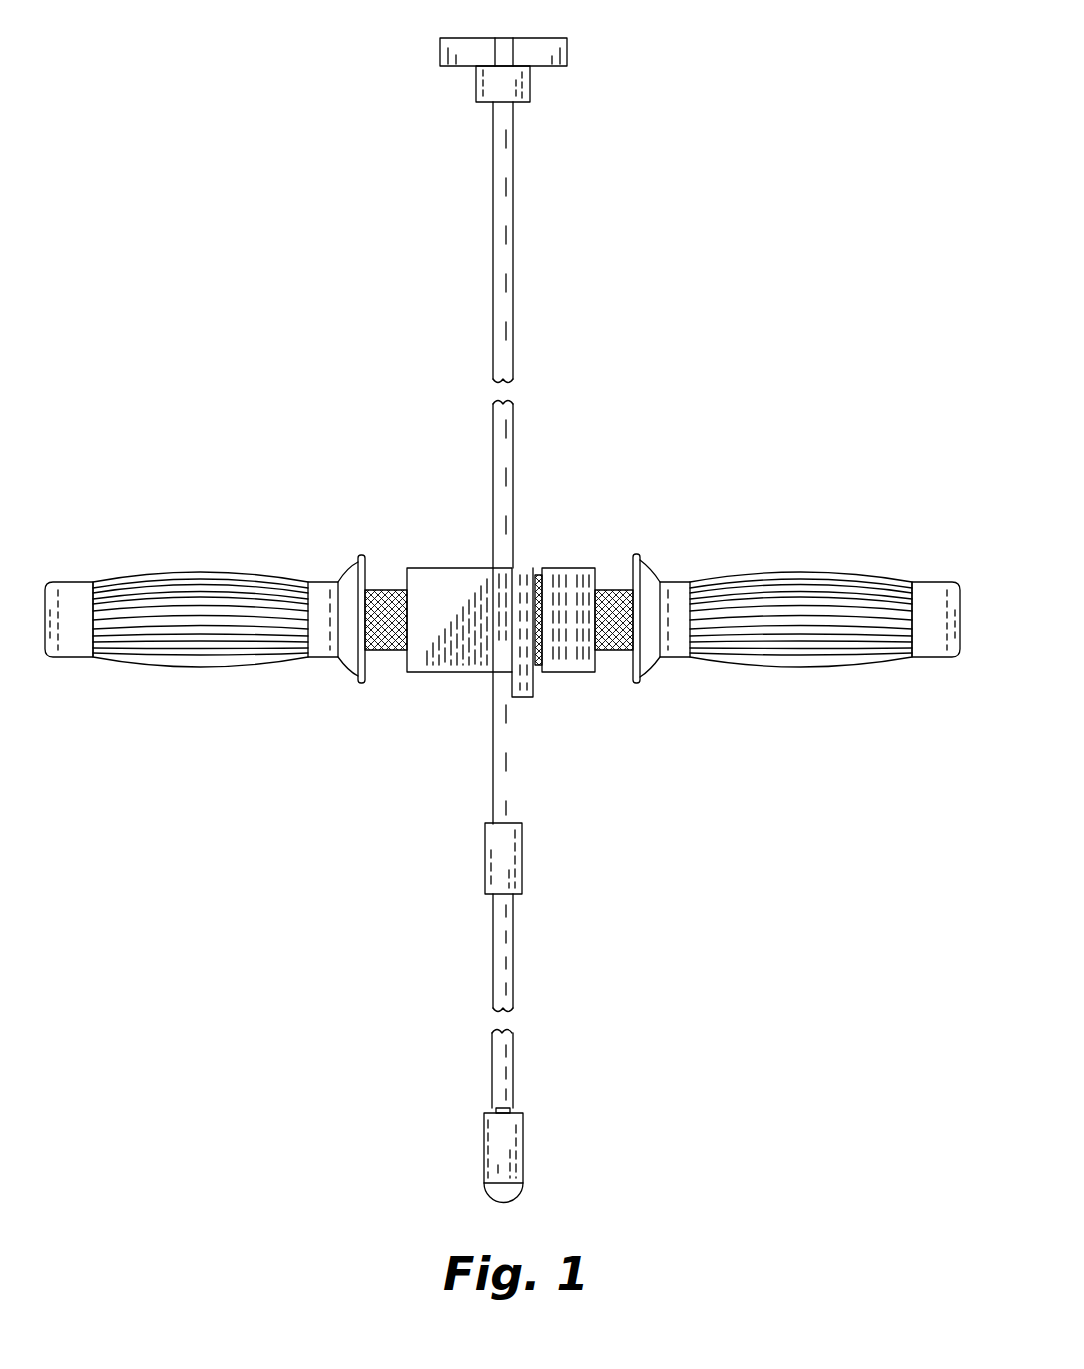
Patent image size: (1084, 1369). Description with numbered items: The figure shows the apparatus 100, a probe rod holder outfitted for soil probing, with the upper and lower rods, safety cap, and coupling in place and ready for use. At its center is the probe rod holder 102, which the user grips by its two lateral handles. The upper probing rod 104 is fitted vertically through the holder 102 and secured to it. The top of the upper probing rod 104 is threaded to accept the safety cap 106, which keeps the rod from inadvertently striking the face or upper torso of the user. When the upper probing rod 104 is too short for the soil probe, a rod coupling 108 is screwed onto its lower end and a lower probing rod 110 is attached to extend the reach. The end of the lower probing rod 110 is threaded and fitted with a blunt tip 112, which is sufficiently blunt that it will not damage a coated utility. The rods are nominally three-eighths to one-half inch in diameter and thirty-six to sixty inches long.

The probe rod holder outfitted for soil probing 100 is at (197, 215).
The probe rod holder 102 is at (570, 567).
The upper probing rod 104 is at (513, 207).
The safety cap 106 is at (568, 52).
The rod coupling 108 is at (522, 861).
The lower probing rod 110 is at (513, 971).
The blunt tip 112 is at (523, 1149).